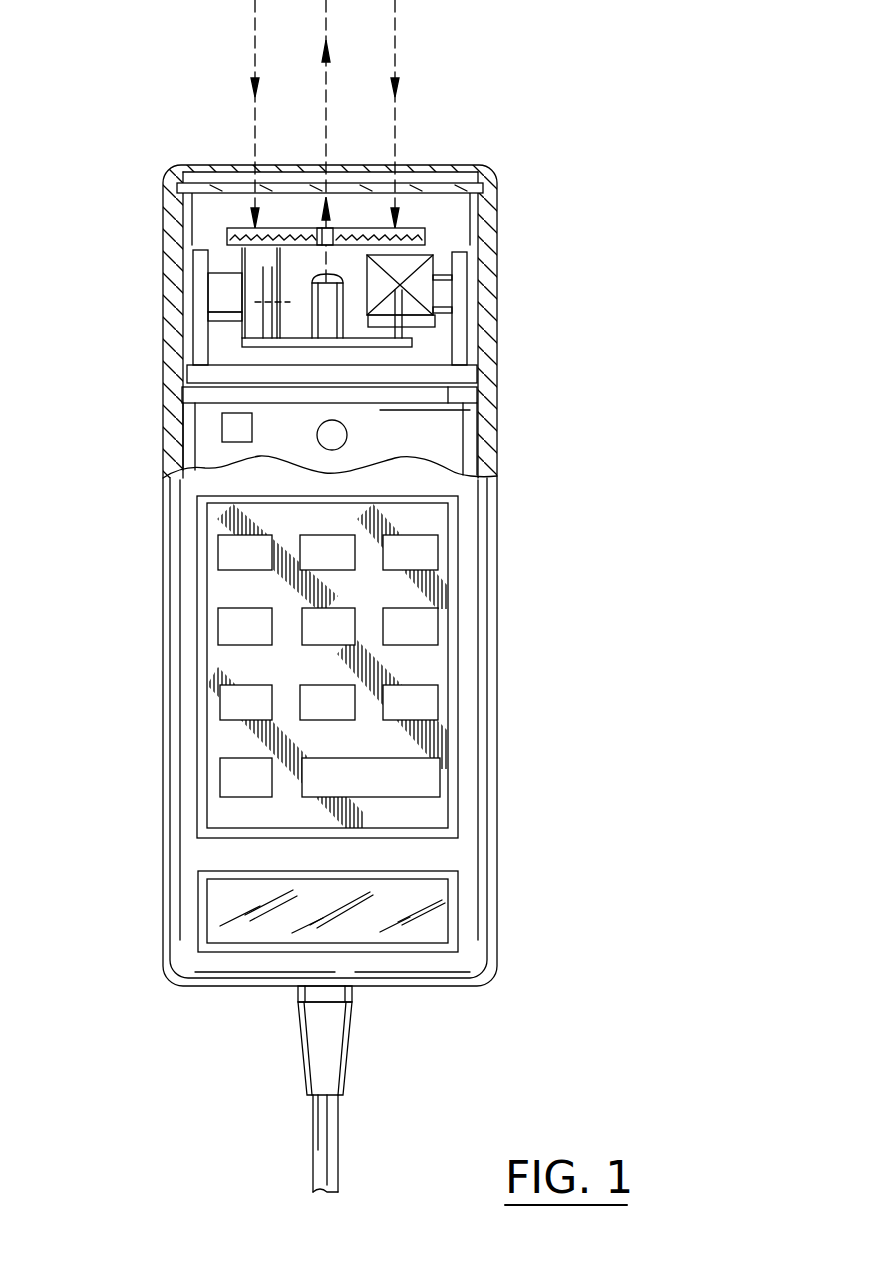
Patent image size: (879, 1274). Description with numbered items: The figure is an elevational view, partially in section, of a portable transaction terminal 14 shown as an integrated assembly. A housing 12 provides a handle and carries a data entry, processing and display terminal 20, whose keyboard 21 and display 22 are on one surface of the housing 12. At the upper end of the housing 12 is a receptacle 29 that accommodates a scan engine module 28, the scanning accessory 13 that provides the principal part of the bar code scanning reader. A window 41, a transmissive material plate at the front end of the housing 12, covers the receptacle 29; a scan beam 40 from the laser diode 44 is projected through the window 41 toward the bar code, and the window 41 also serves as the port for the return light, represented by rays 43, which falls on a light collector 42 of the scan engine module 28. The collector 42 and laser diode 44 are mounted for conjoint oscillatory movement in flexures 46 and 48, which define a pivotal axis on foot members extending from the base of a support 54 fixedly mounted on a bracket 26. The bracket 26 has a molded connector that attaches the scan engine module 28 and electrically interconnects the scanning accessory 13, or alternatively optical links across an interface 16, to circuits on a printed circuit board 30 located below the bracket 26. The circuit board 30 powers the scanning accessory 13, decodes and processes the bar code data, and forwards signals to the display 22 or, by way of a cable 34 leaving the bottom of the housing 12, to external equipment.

The housing 12 is at (163, 553).
The scan engine module 13 is at (92, 290).
The portable transaction terminal 14 is at (500, 590).
The interface 16 is at (445, 416).
The data entry, processing and display terminal 20 is at (331, 667).
The keyboard 21 is at (428, 700).
The display 22 is at (222, 905).
The bracket 26 is at (232, 392).
The scan engine module 28 is at (455, 237).
The receptacle 29 is at (490, 341).
The printed circuit board 30 is at (425, 440).
The cable 34 is at (350, 1030).
The scan beam 40 is at (328, 110).
The window 41 is at (415, 183).
The light collector 42 is at (240, 228).
The return light rays 43 is at (255, 35).
The laser diode 44 is at (320, 285).
The flexure 46 is at (225, 296).
The flexure 48 is at (440, 296).
The support 54 is at (445, 372).